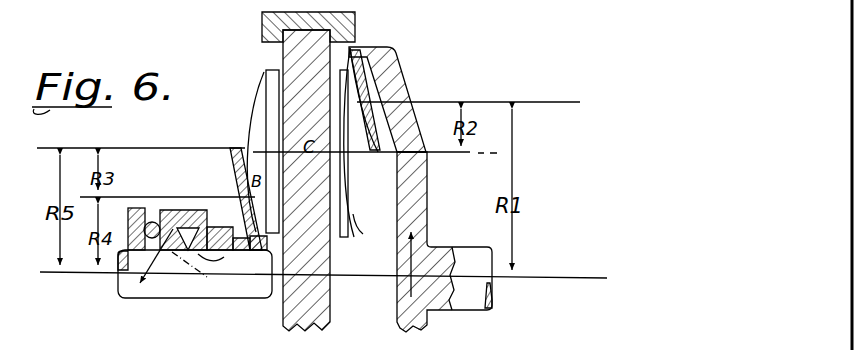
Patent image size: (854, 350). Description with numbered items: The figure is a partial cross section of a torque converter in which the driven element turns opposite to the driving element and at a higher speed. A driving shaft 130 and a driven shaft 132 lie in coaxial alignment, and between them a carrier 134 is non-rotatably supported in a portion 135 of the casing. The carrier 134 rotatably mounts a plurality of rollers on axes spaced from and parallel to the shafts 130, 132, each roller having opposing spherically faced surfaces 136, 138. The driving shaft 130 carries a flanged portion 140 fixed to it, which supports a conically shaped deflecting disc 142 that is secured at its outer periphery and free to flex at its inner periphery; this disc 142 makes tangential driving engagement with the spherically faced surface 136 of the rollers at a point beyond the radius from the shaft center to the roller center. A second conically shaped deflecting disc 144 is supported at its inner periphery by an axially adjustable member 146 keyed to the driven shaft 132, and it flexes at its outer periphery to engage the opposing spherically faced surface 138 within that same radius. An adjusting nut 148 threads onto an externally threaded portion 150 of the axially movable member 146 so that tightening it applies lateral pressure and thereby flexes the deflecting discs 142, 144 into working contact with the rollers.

The driving shaft 130 is at (468, 310).
The driven shaft 132 is at (179, 297).
The carrier 134 is at (322, 297).
The portion of the casing 135 is at (262, 27).
The spherically faced surface 136 is at (356, 214).
The spherically faced surface 138 is at (259, 92).
The flanged portion 140 is at (396, 68).
The conically shaped deflecting disc 142 is at (362, 114).
The second conically shaped deflecting disc 144 is at (232, 147).
The axially adjustable member 146 is at (238, 236).
The adjusting nut 148 is at (162, 211).
The externally threaded portion 150 is at (215, 211).